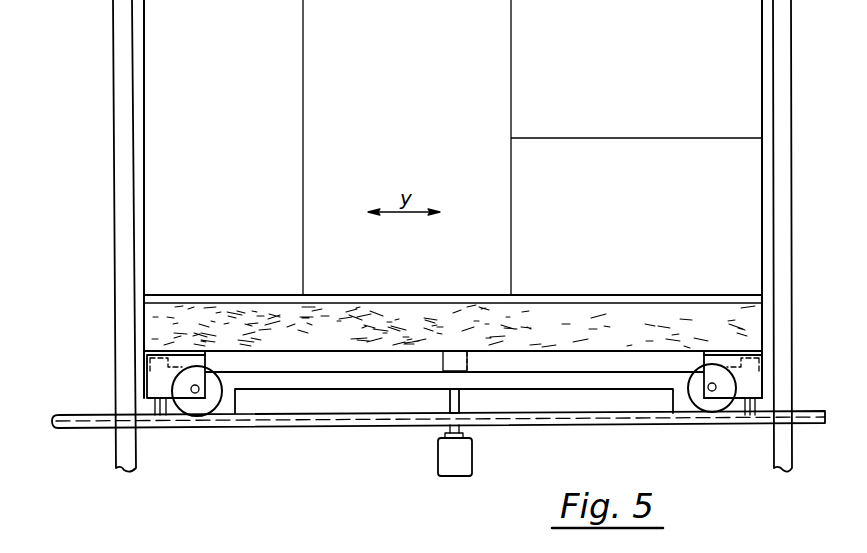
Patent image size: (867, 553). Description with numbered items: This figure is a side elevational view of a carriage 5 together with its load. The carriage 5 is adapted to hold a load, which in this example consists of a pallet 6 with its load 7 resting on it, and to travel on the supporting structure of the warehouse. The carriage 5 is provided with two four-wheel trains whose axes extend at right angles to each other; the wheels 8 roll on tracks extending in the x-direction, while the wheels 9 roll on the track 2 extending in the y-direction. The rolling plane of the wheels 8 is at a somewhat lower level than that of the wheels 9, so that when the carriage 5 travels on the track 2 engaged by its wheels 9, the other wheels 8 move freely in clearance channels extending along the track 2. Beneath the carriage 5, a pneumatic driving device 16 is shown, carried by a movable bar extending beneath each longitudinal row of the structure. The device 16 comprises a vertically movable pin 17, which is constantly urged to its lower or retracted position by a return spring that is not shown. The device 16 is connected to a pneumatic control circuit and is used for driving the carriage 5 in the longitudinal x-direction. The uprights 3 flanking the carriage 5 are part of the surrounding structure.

The track 2 is at (245, 422).
The upright post 3 is at (127, 238).
The carriage 5 is at (571, 355).
The pallet 6 is at (605, 322).
The load 7 is at (453, 199).
The wheels 8 is at (162, 402).
The wheels 9 is at (197, 405).
The pneumatic driving device 16 is at (455, 468).
The vertically movable pin 17 is at (448, 397).